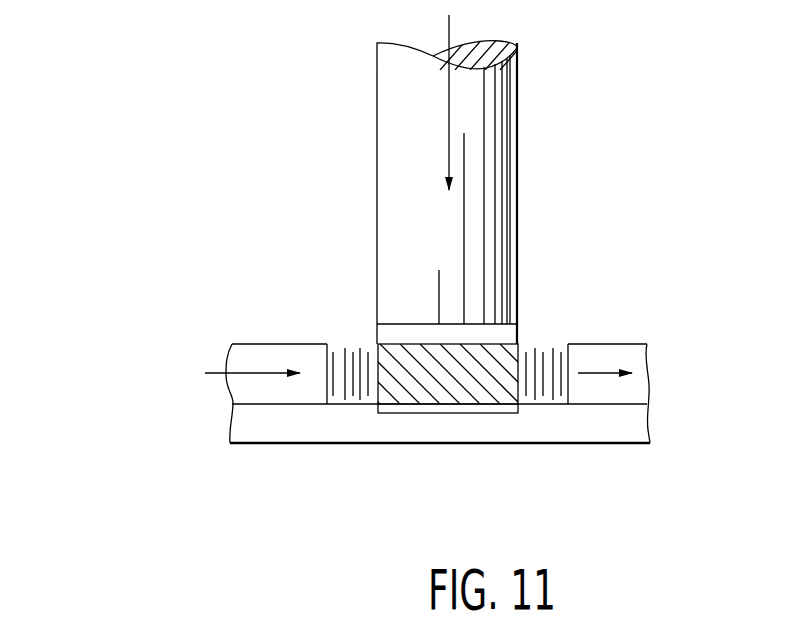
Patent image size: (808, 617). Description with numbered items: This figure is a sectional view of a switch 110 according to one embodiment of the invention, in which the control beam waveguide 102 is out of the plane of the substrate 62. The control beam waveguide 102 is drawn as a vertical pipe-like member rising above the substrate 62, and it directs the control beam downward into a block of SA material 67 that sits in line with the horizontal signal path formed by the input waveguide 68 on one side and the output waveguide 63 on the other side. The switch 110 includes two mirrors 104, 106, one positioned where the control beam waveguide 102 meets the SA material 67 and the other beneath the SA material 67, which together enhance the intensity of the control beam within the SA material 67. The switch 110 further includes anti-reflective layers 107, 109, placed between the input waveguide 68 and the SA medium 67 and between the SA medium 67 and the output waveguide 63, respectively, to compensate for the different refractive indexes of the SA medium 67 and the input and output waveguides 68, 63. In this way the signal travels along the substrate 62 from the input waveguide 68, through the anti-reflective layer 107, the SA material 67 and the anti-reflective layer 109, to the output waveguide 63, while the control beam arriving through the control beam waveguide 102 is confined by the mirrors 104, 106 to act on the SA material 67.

The switch 110 is at (494, 254).
The control beam waveguide 102 is at (487, 172).
The mirror 104 is at (505, 340).
The input waveguide 68 is at (300, 355).
The output waveguide 63 is at (648, 352).
The substrate 62 is at (640, 428).
The anti-reflective layer 107 is at (358, 392).
The anti-reflective layer 109 is at (546, 382).
The SA material 67 is at (455, 392).
The mirror 106 is at (507, 416).